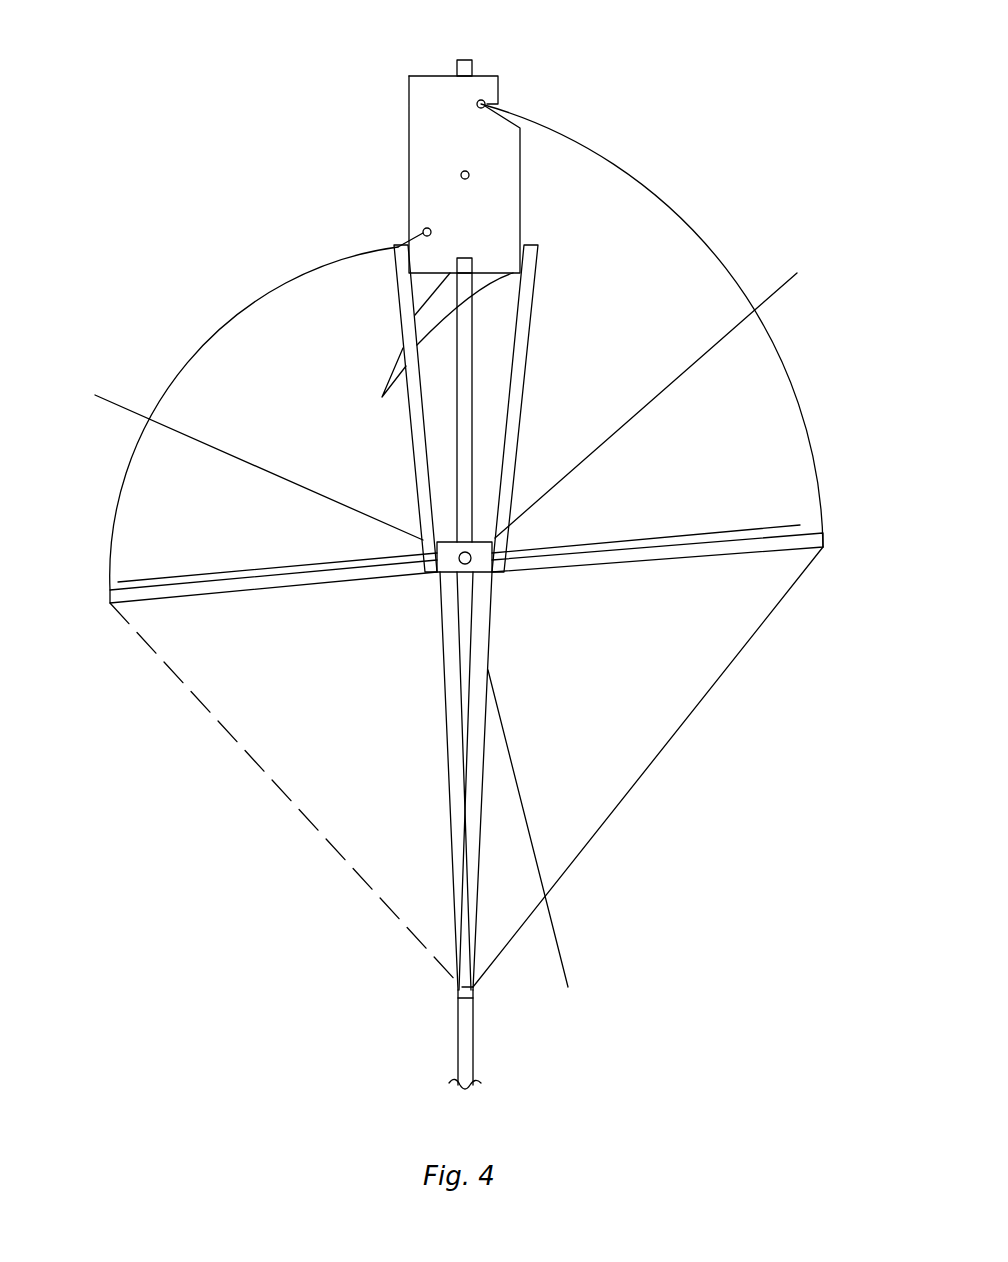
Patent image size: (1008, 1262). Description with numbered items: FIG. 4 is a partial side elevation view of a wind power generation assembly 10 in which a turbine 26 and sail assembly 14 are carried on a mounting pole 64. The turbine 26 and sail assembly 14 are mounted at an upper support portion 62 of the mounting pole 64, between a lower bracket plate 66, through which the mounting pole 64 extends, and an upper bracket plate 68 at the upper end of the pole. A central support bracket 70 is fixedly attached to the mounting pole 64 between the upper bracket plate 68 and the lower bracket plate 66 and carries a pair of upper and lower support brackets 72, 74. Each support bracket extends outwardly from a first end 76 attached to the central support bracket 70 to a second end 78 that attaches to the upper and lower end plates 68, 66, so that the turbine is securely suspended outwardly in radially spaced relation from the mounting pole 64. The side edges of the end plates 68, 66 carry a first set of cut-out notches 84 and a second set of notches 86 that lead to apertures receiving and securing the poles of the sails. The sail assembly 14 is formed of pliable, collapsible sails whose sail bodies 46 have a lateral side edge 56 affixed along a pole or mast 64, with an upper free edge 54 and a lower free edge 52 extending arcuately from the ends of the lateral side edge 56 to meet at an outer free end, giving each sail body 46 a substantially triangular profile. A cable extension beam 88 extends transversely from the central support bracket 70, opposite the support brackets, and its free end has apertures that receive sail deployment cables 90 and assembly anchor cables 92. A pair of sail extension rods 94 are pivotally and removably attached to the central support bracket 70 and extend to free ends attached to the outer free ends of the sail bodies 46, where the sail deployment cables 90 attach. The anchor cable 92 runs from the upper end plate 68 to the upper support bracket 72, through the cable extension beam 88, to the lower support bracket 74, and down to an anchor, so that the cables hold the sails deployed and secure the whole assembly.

The wind power generation assembly 10 is at (612, 78).
The sail assembly 14 is at (662, 225).
The turbine 26 is at (527, 392).
The sail bodies 46 is at (225, 522).
The lower free edge 52 is at (638, 778).
The upper free edge 54 is at (600, 155).
The lateral side edge 56 is at (818, 475).
The upper support portion 62 is at (467, 60).
The mounting pole 64 is at (474, 1050).
The lower bracket plate 66 is at (475, 998).
The upper bracket plate 68 is at (521, 158).
The central support bracket 70 is at (483, 568).
The upper support bracket 72 is at (412, 440).
The lower support bracket 74 is at (446, 708).
The first end 76 is at (433, 578).
The second ends 78 is at (535, 248).
The cut-out notches 84 is at (486, 104).
The second set of cut-out notches 86 is at (422, 234).
The cable extension beam 88 is at (108, 578).
The sail deployment cables 90 is at (258, 463).
The assembly anchor cables 92 is at (545, 880).
The sail extension rods 94 is at (188, 578).